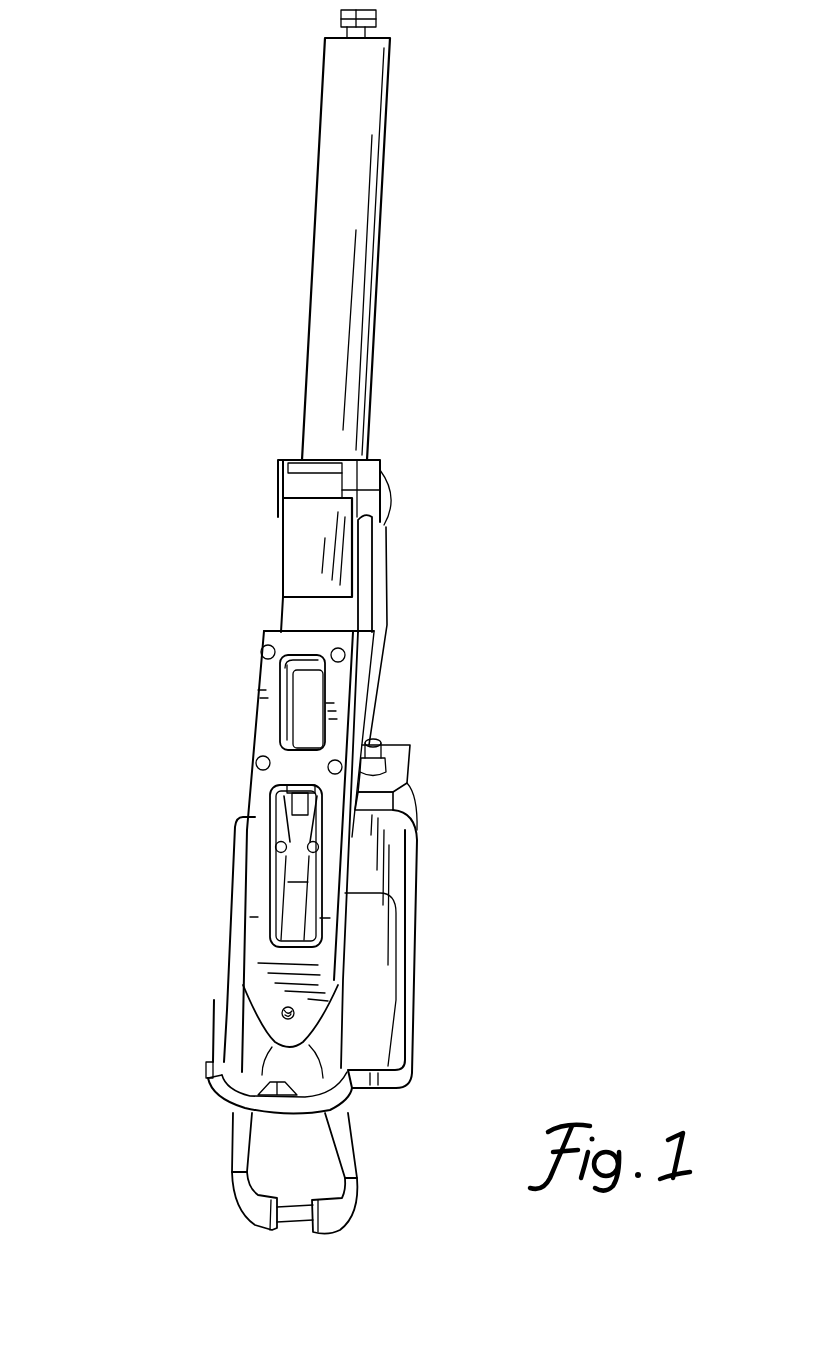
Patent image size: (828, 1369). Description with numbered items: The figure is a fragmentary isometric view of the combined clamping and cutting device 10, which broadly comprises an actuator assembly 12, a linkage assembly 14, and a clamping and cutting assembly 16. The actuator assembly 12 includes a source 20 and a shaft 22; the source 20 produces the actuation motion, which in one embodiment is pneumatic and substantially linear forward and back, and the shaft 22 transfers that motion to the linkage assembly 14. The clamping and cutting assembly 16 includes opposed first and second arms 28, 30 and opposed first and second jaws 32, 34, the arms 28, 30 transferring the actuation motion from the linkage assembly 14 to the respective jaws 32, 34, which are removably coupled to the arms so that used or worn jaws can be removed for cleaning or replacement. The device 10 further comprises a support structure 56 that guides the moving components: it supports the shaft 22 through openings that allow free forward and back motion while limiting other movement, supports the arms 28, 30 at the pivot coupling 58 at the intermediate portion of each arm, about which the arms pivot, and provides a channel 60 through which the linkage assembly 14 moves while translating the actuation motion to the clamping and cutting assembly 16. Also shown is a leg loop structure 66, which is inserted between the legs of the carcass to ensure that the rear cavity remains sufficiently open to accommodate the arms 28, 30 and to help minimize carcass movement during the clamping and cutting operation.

The device 10 is at (570, 914).
The actuator assembly 12 is at (181, 579).
The linkage assembly 14 is at (163, 898).
The clamping and cutting assembly 16 is at (135, 1176).
The source 20 is at (298, 548).
The shaft 22 is at (302, 708).
The first arm 28 is at (212, 1154).
The second arm 30 is at (371, 1126).
The first jaw 32 is at (255, 1227).
The second jaw 34 is at (333, 1235).
The support structure 56 is at (258, 828).
The pivot coupling 58 is at (267, 999).
The channel 60 is at (359, 929).
The leg loop structure 66 is at (215, 1100).